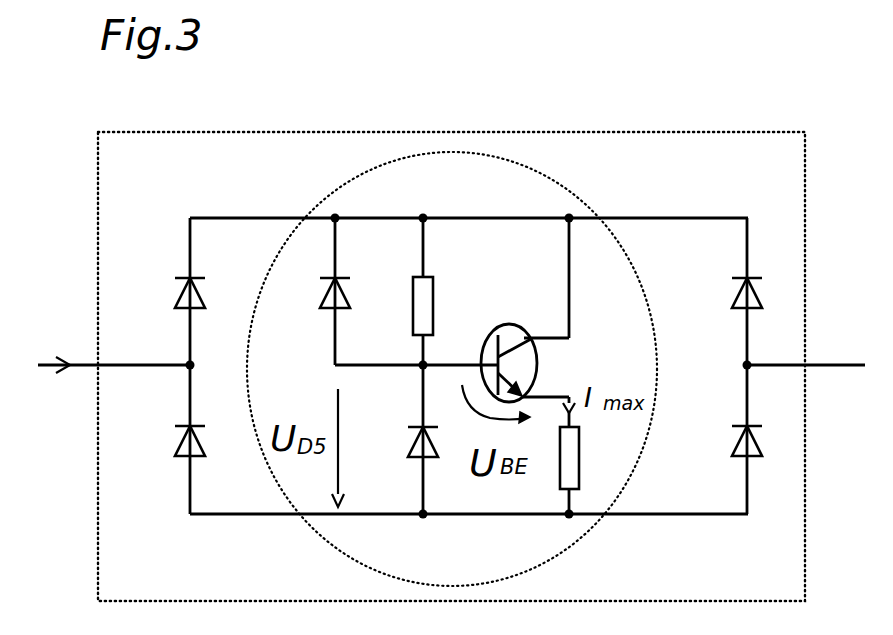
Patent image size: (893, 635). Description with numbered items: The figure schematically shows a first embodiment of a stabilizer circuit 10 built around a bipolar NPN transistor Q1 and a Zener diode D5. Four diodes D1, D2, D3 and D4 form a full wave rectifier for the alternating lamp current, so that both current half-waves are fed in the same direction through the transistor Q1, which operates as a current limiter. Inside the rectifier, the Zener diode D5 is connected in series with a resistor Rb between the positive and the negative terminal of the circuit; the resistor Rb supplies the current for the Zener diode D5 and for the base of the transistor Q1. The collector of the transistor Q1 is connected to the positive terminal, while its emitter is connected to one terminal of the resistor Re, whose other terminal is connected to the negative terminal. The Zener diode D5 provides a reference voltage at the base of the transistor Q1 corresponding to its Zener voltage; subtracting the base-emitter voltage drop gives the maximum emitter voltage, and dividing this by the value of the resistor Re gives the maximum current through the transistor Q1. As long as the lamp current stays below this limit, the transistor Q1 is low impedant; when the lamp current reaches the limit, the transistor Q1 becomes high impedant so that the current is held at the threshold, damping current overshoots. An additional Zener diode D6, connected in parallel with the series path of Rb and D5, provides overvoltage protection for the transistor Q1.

The stabilizer circuit 10 is at (700, 130).
The diode D1 is at (167, 293).
The diode D2 is at (167, 441).
The diode D3 is at (724, 293).
The diode D4 is at (724, 441).
The Zener diode D5 is at (401, 442).
The Zener diode D6 is at (313, 293).
The bipolar NPN transistor Q1 is at (525, 310).
The resistor Rb is at (399, 306).
The resistor Re is at (595, 455).